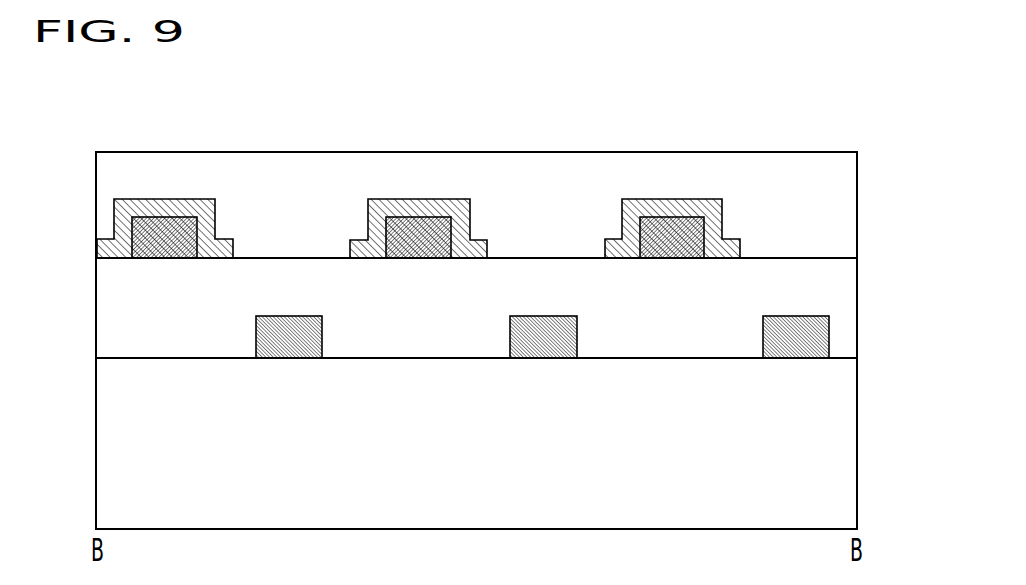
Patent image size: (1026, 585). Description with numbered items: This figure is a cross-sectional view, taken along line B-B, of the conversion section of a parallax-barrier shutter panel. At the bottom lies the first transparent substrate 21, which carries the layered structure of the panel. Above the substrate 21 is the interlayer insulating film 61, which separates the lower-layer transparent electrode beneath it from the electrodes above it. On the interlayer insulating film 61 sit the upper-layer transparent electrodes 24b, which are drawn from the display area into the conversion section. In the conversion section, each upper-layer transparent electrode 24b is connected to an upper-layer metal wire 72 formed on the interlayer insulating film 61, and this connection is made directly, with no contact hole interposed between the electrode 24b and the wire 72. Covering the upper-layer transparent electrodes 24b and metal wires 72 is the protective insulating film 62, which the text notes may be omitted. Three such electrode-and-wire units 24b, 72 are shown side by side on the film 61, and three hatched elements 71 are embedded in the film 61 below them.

The first transparent substrate 21 is at (840, 472).
The interlayer insulating film 61 is at (842, 287).
The protective insulating film 62 is at (842, 205).
The lower wiring 71 is at (267, 340).
The upper-layer metal wire 72 is at (135, 225).
The upper-layer transparent electrode 24b is at (425, 199).